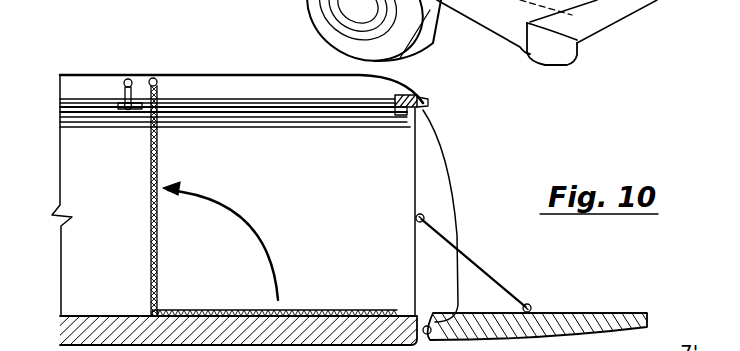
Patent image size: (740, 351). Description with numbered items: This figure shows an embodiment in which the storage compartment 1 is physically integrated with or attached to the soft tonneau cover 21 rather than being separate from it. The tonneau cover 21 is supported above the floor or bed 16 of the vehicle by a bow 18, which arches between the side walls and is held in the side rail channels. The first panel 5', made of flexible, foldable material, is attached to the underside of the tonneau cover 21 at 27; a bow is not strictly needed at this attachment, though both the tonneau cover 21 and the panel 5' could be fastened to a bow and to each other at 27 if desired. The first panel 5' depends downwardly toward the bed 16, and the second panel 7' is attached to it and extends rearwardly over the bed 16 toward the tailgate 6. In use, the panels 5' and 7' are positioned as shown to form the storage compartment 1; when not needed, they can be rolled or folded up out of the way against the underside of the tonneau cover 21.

The storage compartment 1 is at (318, 193).
The tonneau cover 21 is at (108, 75).
The bow 18 is at (130, 78).
The attachment location 27 is at (158, 82).
The first panel 5' is at (180, 201).
The second panel 7' is at (277, 275).
The bed 16 is at (112, 316).
The tailgate 6 is at (592, 312).